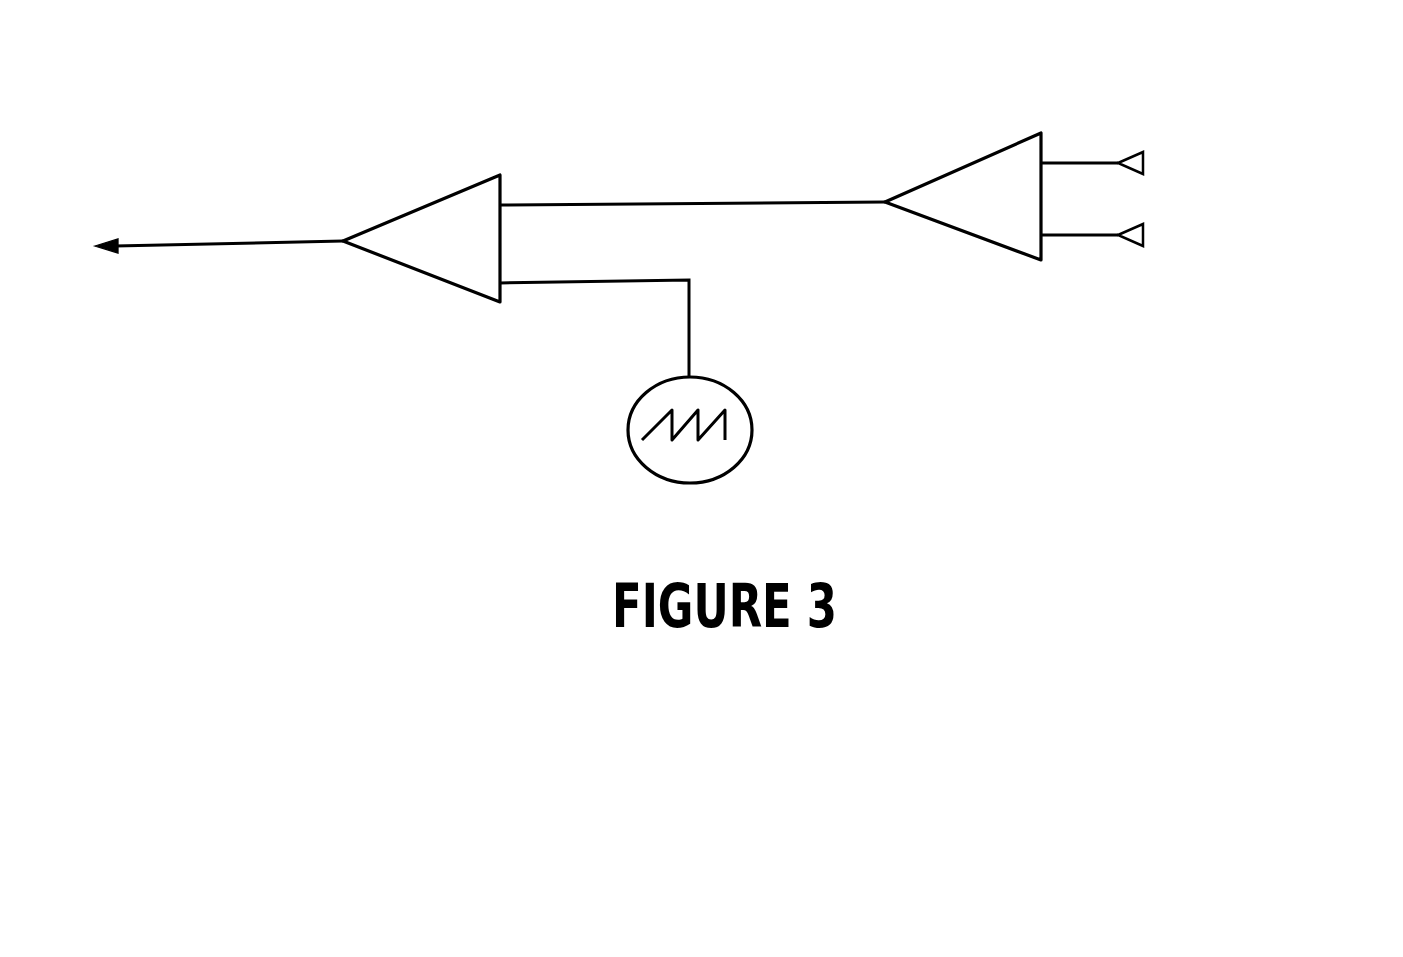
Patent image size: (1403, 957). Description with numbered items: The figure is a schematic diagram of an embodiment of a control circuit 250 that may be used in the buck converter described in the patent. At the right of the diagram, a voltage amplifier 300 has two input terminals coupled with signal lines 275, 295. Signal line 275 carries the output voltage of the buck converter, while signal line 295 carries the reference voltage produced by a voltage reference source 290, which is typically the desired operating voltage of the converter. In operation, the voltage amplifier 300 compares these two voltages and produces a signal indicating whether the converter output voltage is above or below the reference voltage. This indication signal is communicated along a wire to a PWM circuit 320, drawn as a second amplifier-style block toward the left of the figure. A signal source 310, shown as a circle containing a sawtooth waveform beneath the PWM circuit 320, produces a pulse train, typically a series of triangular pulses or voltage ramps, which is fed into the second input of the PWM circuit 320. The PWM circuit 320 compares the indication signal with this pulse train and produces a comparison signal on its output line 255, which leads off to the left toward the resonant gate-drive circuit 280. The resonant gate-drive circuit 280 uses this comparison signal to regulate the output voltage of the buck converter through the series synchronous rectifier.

The control circuit 250 is at (634, 58).
The PWM output line to resonant gate drive 255 is at (263, 248).
The signal line 275 is at (1055, 165).
The resonant gate-drive circuit 280 is at (228, 208).
The voltage reference source 290 is at (1296, 240).
The signal line 295 is at (1047, 238).
The voltage amplifier 300 is at (1041, 133).
The signal source 310 is at (753, 426).
The PWM circuit 320 is at (500, 175).